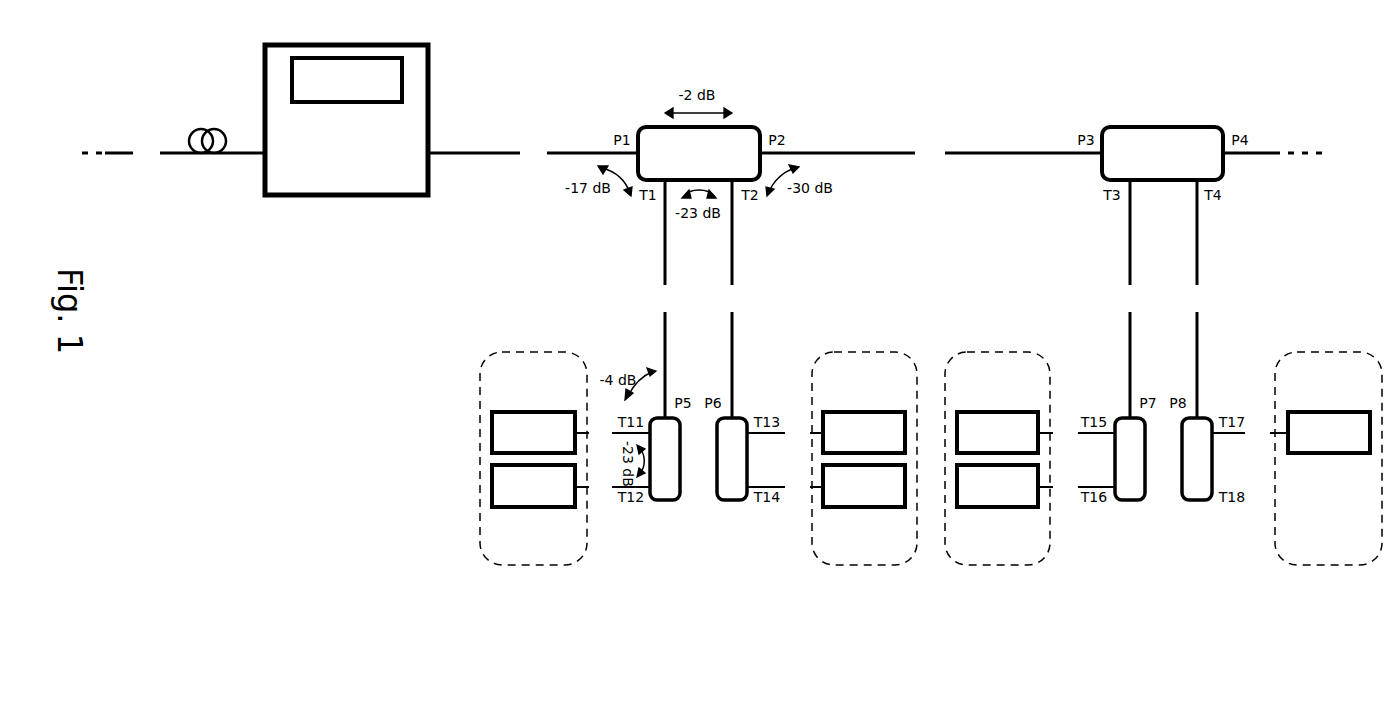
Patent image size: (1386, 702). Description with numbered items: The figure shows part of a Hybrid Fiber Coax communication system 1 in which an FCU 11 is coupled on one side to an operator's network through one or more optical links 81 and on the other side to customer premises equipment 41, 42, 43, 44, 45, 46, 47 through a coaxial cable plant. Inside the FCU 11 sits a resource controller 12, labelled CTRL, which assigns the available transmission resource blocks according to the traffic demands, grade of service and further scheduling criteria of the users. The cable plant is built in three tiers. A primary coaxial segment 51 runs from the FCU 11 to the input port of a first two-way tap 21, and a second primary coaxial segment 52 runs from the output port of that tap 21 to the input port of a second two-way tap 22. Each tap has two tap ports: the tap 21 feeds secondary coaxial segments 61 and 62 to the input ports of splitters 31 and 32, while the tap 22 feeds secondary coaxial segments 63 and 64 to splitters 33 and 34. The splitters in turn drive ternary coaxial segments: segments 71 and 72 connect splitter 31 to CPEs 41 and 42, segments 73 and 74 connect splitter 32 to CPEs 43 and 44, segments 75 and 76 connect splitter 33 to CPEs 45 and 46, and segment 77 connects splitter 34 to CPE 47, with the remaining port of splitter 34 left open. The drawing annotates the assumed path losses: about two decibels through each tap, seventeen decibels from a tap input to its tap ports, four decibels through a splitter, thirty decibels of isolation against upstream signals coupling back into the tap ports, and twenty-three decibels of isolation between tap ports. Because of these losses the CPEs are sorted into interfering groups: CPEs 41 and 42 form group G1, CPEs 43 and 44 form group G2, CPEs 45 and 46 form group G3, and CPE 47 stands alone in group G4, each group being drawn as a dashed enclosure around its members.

The Hybrid Fiber Coax communication system 1 is at (340, 508).
The FCU 11 is at (348, 195).
The resource controller 12 is at (347, 58).
The first two-way tap 21 is at (762, 132).
The second two-way tap 22 is at (1161, 127).
The splitter 31 is at (663, 500).
The splitter 32 is at (730, 500).
The splitter 33 is at (1128, 500).
The splitter 34 is at (1195, 500).
The customer premises equipment 41 is at (531, 412).
The customer premises equipment 42 is at (532, 507).
The customer premises equipment 43 is at (862, 412).
The customer premises equipment 44 is at (863, 507).
The customer premises equipment 45 is at (996, 412).
The customer premises equipment 46 is at (997, 507).
The customer premises equipment 47 is at (1329, 412).
The primary coaxial segment 51 is at (533, 153).
The primary coaxial segment 52 is at (931, 153).
The secondary coaxial segment 61 is at (664, 299).
The secondary coaxial segment 62 is at (731, 299).
The secondary coaxial segment 63 is at (1129, 299).
The secondary coaxial segment 64 is at (1196, 299).
The ternary coaxial segment 71 is at (612, 433).
The ternary coaxial segment 72 is at (612, 487).
The ternary coaxial segment 73 is at (785, 433).
The ternary coaxial segment 74 is at (785, 487).
The ternary coaxial segment 75 is at (1076, 433).
The ternary coaxial segment 76 is at (1076, 487).
The ternary coaxial segment 77 is at (1250, 433).
The optical link 81 is at (173, 145).
The interfering group G1 is at (532, 565).
The interfering group G2 is at (863, 565).
The third interfering group G3 is at (997, 565).
The interfering group G4 is at (1330, 565).